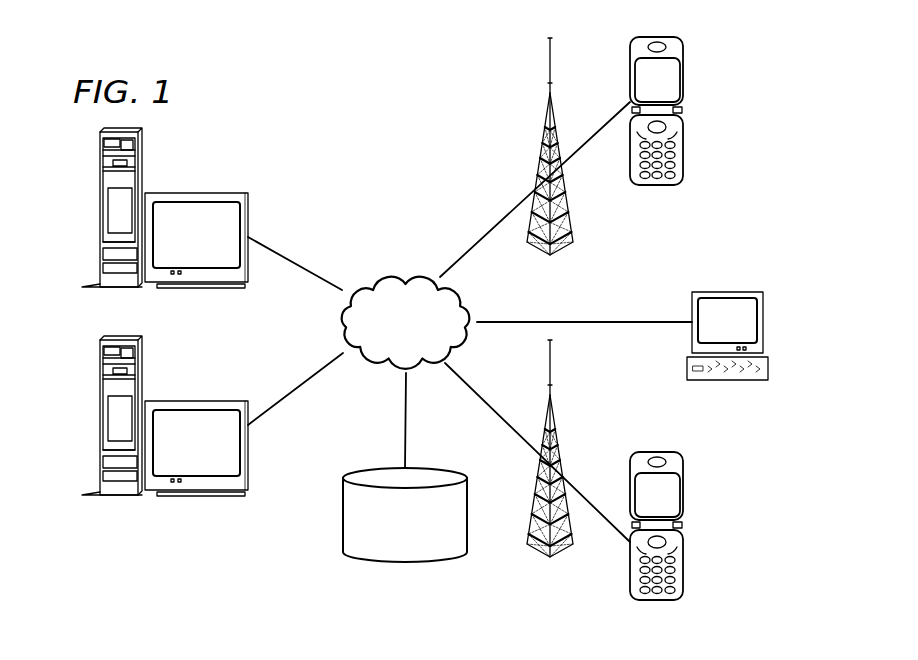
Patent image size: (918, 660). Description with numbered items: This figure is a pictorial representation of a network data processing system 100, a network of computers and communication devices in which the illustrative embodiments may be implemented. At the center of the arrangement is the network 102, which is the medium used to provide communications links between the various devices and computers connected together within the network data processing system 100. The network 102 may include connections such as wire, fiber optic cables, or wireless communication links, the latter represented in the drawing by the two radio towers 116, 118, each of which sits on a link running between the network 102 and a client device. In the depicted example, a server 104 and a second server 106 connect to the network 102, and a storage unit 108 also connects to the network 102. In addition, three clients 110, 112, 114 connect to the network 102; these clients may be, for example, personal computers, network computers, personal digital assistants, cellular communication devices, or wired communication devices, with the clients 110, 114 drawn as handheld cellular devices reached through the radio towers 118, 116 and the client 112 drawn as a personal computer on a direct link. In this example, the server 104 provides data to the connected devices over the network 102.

The network data processing system 100 is at (352, 159).
The network 102 is at (378, 275).
The server 104 is at (100, 208).
The server 106 is at (100, 420).
The storage unit 108 is at (385, 562).
The client 110 is at (685, 148).
The client 112 is at (765, 313).
The client 114 is at (686, 565).
The radio tower 116 is at (557, 437).
The radio tower 118 is at (540, 147).